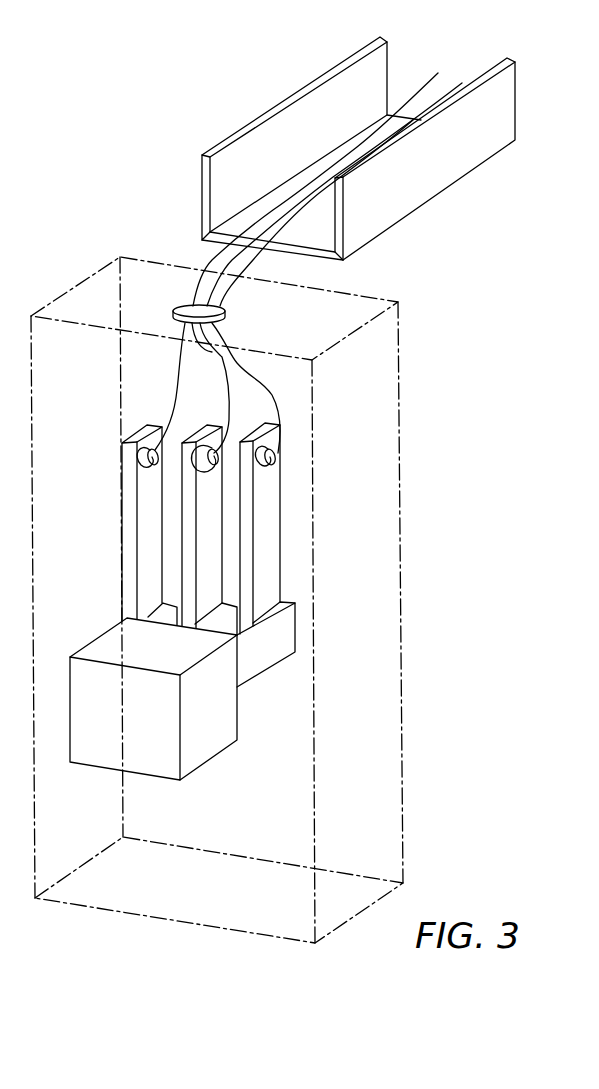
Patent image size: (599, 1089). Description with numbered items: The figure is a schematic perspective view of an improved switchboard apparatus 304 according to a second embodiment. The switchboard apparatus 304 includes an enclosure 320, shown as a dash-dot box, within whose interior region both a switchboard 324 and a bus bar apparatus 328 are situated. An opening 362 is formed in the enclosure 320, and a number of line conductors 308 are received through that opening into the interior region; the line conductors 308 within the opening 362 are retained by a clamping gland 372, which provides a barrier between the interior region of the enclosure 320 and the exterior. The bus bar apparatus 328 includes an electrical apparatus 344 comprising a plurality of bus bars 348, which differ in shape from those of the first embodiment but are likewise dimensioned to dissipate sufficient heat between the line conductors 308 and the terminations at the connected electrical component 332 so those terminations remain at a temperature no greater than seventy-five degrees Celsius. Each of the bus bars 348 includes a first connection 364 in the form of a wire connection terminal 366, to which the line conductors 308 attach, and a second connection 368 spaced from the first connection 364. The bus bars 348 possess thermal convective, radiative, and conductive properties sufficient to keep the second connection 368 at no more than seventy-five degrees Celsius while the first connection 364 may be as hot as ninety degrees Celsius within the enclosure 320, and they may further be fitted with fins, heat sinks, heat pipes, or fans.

The switchboard apparatus 304 is at (412, 582).
The line conductors 308 is at (210, 352).
The enclosure 320 is at (405, 412).
The switchboard 324 is at (414, 693).
The bus bar apparatus 328 is at (110, 486).
The electrical component 332 is at (98, 768).
The electrical apparatus 344 is at (110, 452).
The bus bars 348 is at (202, 514).
The opening 362 is at (173, 317).
The first connection 364 is at (150, 455).
The wire connection terminal 366 is at (160, 450).
The second connection 368 is at (250, 665).
The clamping gland 372 is at (184, 307).